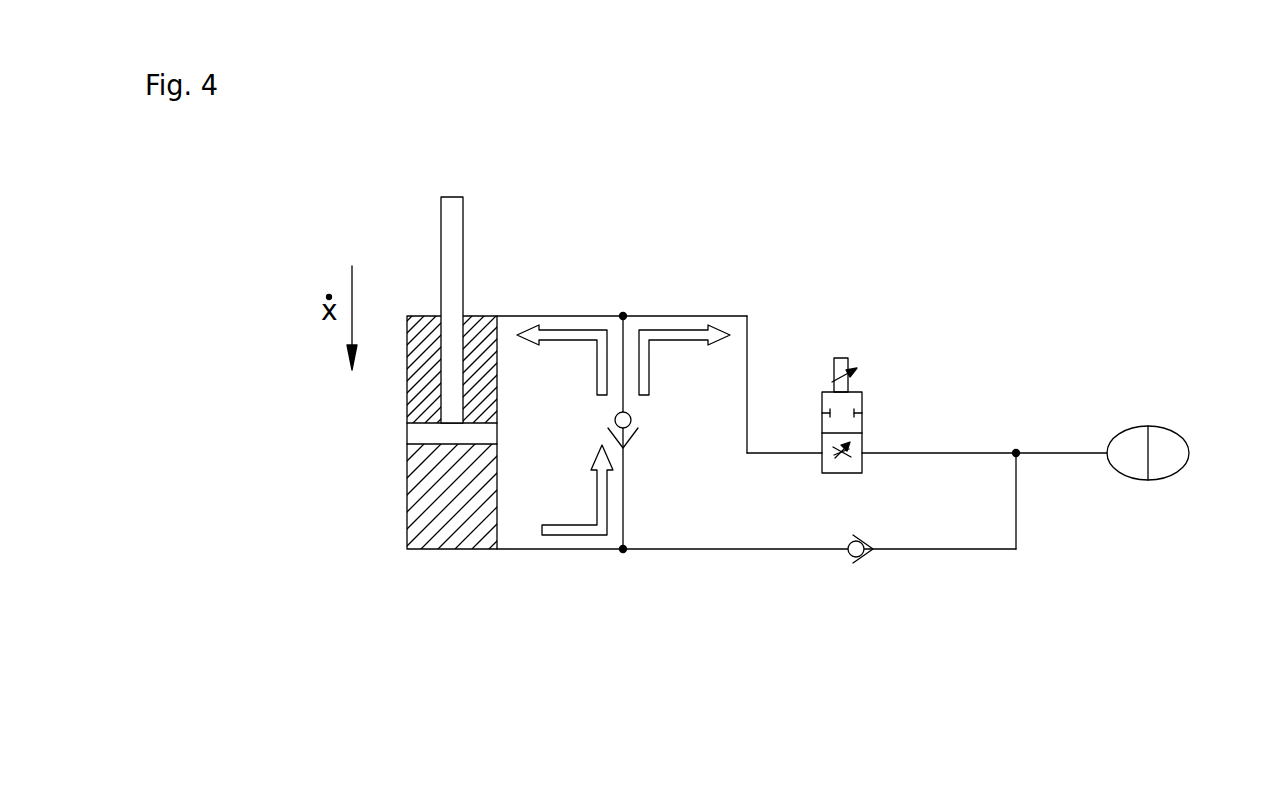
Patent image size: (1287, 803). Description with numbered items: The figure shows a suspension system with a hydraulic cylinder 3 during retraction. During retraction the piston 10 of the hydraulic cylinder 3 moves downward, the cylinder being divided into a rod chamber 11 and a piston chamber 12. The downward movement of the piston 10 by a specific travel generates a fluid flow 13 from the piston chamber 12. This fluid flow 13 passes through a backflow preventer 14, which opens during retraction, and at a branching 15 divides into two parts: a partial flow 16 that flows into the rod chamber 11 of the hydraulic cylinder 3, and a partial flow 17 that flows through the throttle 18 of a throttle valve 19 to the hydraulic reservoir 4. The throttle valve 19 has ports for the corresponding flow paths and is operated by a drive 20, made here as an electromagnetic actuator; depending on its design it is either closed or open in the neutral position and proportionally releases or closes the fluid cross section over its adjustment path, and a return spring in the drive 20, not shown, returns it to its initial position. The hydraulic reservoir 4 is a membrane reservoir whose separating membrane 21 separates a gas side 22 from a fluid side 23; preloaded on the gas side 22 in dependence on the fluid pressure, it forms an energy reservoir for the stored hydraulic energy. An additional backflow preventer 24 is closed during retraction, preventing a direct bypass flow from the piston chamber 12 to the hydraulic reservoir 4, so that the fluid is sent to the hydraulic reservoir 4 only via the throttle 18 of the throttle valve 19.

The hydraulic cylinder 3 is at (455, 357).
The hydraulic reservoir 4 is at (1168, 452).
The piston 10 is at (453, 206).
The rod chamber 11 is at (480, 340).
The piston chamber 12 is at (435, 525).
The fluid flow 13 is at (590, 528).
The backflow preventer 14 is at (630, 424).
The branching 15 is at (623, 316).
The partial flow 16 is at (600, 348).
The partial flow 17 is at (643, 348).
The throttle 18 is at (843, 456).
The throttle valve 19 is at (902, 405).
The drive 20 is at (847, 383).
The separating membrane 21 is at (1148, 458).
The gas side 22 is at (1168, 465).
The fluid side 23 is at (1130, 445).
The backflow preventer 24 is at (856, 562).